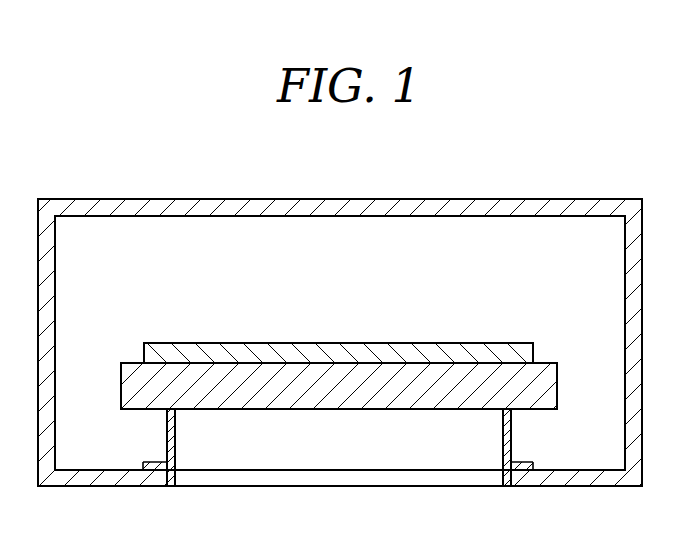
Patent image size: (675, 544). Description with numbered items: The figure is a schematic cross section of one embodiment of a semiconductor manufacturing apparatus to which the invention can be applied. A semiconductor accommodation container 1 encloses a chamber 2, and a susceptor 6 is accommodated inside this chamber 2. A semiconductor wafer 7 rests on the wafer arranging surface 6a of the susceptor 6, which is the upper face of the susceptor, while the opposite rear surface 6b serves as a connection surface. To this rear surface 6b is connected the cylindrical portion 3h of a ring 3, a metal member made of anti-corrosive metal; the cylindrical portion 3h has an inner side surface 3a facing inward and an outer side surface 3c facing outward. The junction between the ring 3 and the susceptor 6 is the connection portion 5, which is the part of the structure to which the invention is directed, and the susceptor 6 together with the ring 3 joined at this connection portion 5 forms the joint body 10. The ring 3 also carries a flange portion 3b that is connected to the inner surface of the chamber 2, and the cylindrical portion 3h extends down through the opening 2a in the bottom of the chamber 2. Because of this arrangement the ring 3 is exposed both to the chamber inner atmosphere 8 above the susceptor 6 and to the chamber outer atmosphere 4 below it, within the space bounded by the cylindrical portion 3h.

The semiconductor accommodation container 1 is at (532, 193).
The chamber 2 is at (434, 205).
The opening 2a is at (497, 475).
The ring 3 is at (520, 450).
The inner side surface 3a is at (503, 432).
The flange portion 3b is at (537, 462).
The outer side surface 3c is at (165, 436).
The cylindrical portion 3h is at (502, 447).
The chamber outer atmosphere 4 is at (327, 455).
The connection portion 5 is at (165, 417).
The susceptor 6 is at (564, 381).
The wafer arranging surface 6a is at (270, 362).
The rear surface 6b is at (245, 412).
The semiconductor wafer 7 is at (336, 356).
The chamber inner atmosphere 8 is at (480, 295).
The joint body 10 is at (549, 343).